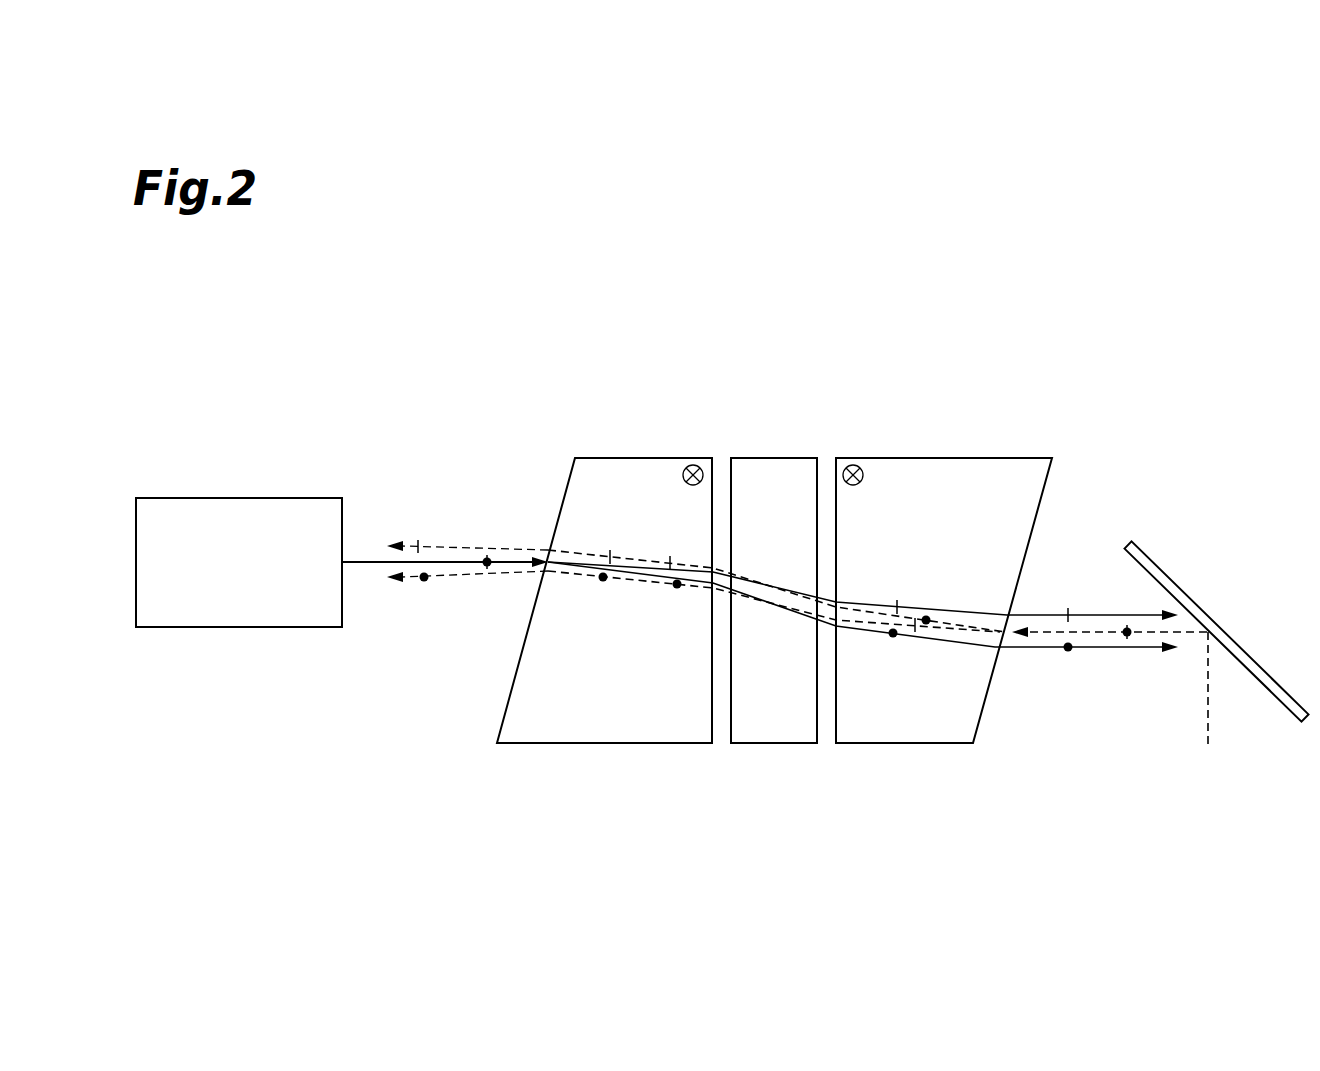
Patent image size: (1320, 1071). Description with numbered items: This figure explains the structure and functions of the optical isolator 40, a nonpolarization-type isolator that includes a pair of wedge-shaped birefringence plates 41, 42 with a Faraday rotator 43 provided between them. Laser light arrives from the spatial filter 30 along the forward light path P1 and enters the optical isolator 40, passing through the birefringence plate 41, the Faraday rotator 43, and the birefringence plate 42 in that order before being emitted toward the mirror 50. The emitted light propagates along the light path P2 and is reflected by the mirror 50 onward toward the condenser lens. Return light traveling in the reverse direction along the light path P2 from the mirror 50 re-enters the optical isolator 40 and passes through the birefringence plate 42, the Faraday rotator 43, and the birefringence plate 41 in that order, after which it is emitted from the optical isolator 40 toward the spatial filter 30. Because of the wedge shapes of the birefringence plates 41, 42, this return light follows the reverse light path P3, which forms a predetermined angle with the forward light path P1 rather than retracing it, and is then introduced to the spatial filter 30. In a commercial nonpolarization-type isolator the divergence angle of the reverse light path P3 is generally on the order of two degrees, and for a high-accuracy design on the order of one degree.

The spatial filter 30 is at (231, 498).
The optical isolator 40 is at (774, 536).
The wedge-shaped birefringence plate 41 is at (632, 458).
The wedge-shaped birefringence plate 42 is at (944, 558).
The Faraday rotator 43 is at (770, 458).
The mirror 50 is at (1160, 567).
The forward light path P1 is at (435, 559).
The light path P2 is at (1093, 613).
The reverse light path P3 is at (440, 630).